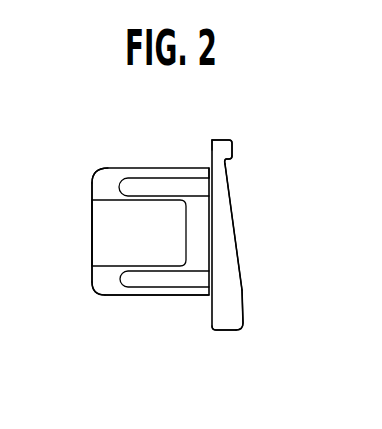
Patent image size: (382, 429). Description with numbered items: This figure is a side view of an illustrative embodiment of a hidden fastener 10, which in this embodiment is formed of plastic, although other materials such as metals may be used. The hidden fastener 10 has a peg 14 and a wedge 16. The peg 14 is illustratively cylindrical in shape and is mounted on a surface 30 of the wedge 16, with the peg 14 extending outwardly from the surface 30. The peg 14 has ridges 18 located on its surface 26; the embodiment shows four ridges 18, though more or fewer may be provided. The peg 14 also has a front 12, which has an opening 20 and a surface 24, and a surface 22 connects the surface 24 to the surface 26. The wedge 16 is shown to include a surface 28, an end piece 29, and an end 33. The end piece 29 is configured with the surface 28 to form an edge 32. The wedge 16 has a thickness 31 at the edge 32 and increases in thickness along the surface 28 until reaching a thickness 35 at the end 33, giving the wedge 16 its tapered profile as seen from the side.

The hidden fastener 10 is at (254, 116).
The front 12 is at (83, 220).
The peg 14 is at (97, 299).
The wedge 16 is at (251, 237).
The ridges 18 is at (136, 184).
The opening 20 is at (89, 240).
The surface 22 is at (100, 171).
The surface 24 is at (92, 184).
The surface 26 is at (128, 297).
The surface 28 is at (243, 285).
The end piece 29 is at (229, 140).
The surface 30 is at (211, 140).
The thickness 31 is at (208, 166).
The edge 32 is at (228, 163).
The end 33 is at (222, 334).
The thickness 35 is at (248, 323).